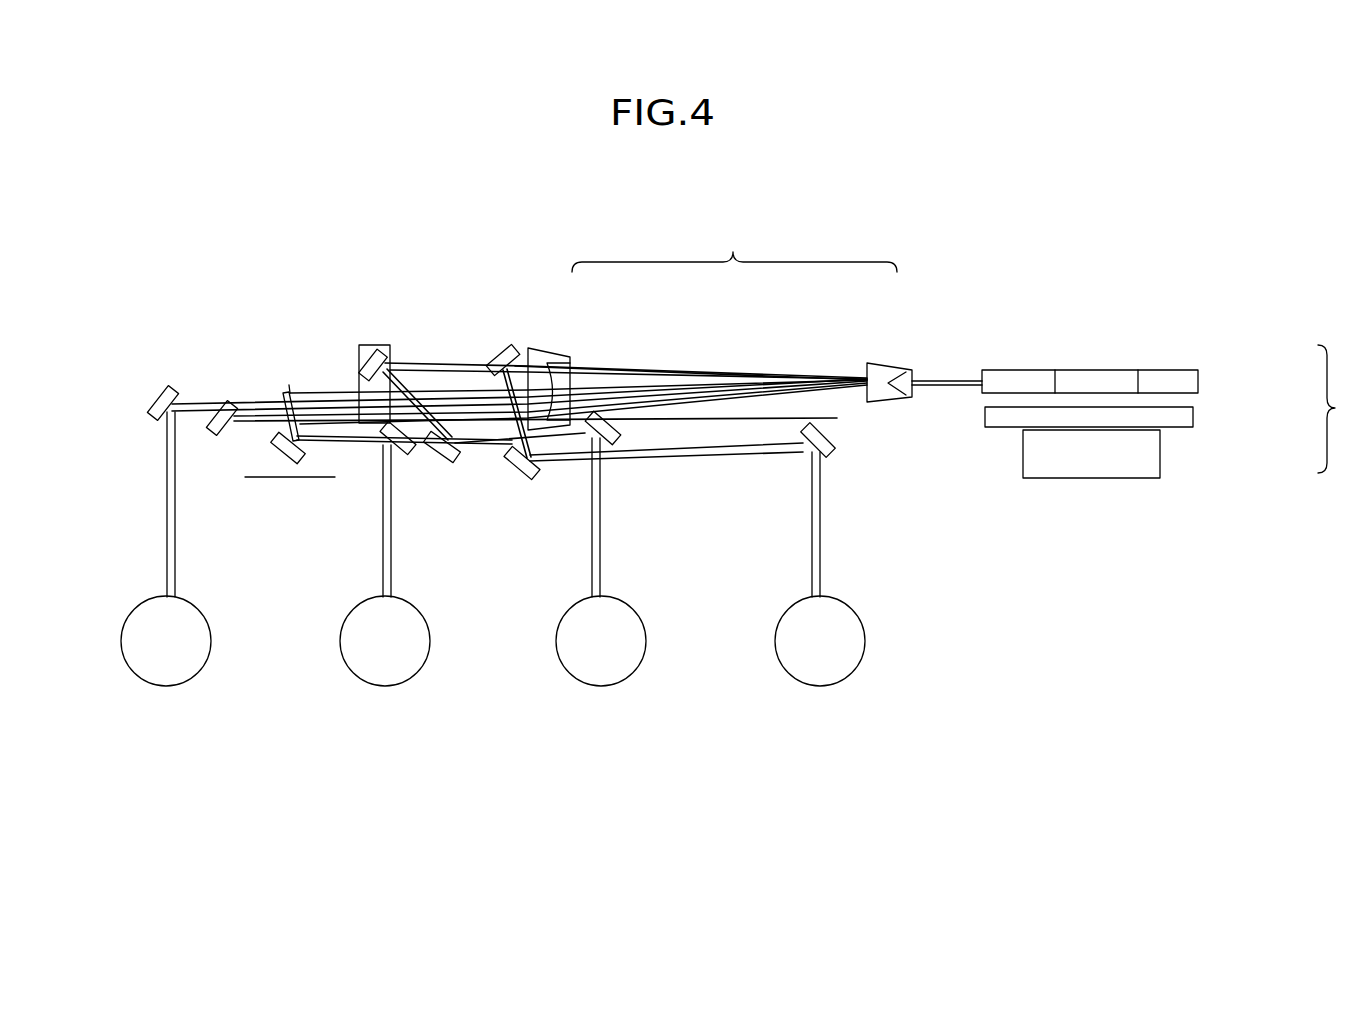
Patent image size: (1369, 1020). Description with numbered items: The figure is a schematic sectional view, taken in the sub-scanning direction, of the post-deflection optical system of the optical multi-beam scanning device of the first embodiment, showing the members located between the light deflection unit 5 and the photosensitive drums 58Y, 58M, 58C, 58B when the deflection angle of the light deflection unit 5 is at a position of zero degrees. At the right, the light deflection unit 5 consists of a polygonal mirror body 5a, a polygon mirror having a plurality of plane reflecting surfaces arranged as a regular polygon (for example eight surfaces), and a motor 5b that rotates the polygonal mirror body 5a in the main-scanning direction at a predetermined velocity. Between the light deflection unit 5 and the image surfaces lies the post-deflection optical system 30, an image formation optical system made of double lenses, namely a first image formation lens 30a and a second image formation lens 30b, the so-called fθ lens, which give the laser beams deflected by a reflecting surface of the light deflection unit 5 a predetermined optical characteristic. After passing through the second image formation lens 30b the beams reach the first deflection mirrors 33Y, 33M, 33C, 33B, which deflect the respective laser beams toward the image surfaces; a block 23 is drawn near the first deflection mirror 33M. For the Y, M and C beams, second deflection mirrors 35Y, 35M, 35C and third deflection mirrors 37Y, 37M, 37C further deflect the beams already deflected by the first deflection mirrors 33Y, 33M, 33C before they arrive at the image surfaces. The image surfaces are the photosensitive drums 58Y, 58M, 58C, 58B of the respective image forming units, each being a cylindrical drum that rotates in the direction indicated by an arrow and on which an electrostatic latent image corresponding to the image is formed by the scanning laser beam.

The light deflection unit 5 is at (1341, 409).
The polygonal mirror body 5a is at (1193, 388).
The motor 5b is at (1193, 426).
The combining block 23 is at (378, 341).
The post-deflection optical system 30 is at (734, 238).
The first image formation lens 30a is at (877, 362).
The second image formation lens 30b is at (570, 347).
The first deflection mirror 33B is at (150, 397).
The first deflection mirror 33C is at (282, 374).
The first deflection mirror 33M is at (362, 344).
The first deflection mirror 33Y is at (497, 357).
The second deflection mirror 35C is at (280, 452).
The second deflection mirror 35M is at (440, 459).
The second deflection mirror 35Y is at (538, 474).
The third deflection mirror 37C is at (403, 453).
The third deflection mirror 37M is at (615, 439).
The third deflection mirror 37Y is at (818, 420).
The photosensitive drum 58B is at (172, 660).
The photosensitive drum 58C is at (385, 660).
The photosensitive drum 58M is at (600, 660).
The photosensitive drum 58Y is at (820, 660).